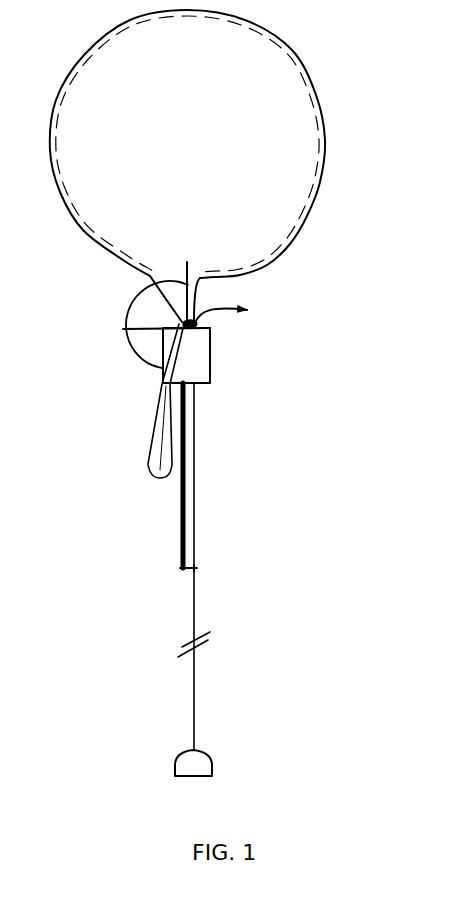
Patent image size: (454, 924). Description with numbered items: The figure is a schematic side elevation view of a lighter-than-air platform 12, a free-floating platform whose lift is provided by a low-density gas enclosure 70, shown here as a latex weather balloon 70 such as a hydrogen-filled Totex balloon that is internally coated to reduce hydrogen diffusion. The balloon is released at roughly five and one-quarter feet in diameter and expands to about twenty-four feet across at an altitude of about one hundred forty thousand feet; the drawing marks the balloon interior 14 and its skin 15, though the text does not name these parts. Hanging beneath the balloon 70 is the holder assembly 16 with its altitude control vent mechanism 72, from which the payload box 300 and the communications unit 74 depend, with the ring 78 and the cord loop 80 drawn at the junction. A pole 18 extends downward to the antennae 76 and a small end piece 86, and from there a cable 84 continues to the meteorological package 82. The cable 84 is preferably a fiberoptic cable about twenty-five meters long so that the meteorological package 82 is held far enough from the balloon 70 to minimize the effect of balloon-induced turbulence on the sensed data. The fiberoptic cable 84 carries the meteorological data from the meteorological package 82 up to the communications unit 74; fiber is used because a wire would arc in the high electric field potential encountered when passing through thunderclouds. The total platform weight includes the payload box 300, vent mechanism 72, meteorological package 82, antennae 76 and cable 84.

The lighter-than-air platform 12 is at (325, 99).
The lighter-than-air gas 14 is at (218, 207).
The balloon skin 15 is at (53, 156).
The balloon holder assembly 16 is at (225, 332).
The pole 18 is at (208, 530).
The low-density gas enclosure 70 is at (273, 261).
The altitude control vent mechanism 72 is at (204, 312).
The communications unit 74 is at (209, 365).
The antennae 76 is at (175, 556).
The ring 78 is at (123, 330).
The cord loop 80 is at (146, 468).
The meteorological package 82 is at (208, 755).
The cable 84 is at (196, 690).
The pole end cap 86 is at (197, 568).
The payload box 300 is at (210, 383).